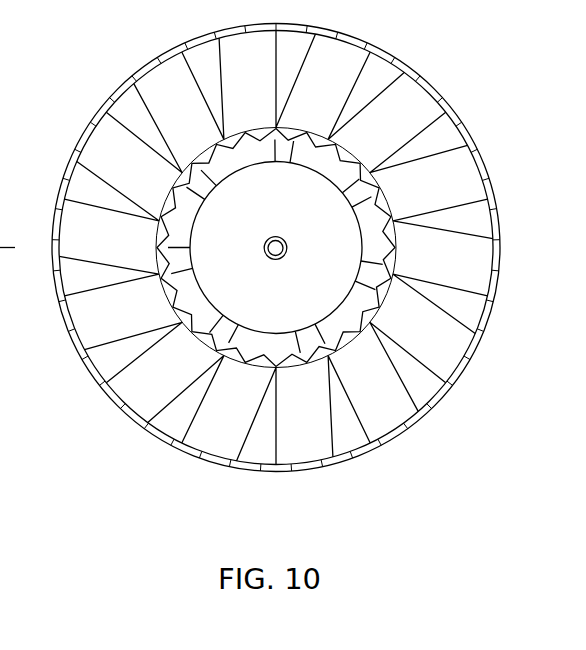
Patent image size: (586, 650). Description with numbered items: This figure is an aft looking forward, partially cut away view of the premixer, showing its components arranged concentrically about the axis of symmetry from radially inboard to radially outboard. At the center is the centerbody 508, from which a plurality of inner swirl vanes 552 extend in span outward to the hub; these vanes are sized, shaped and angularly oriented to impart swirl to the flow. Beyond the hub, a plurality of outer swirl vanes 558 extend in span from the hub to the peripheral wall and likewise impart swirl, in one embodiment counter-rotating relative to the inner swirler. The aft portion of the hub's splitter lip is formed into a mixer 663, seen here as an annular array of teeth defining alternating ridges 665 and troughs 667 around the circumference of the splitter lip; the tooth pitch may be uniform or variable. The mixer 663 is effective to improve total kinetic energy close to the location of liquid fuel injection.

The inner swirl vanes 552 is at (397, 263).
The outer swirl vanes 558 is at (398, 142).
The centerbody 508 is at (326, 218).
The mixer 663 is at (185, 353).
The ridges 665 is at (357, 323).
The troughs 667 is at (392, 263).